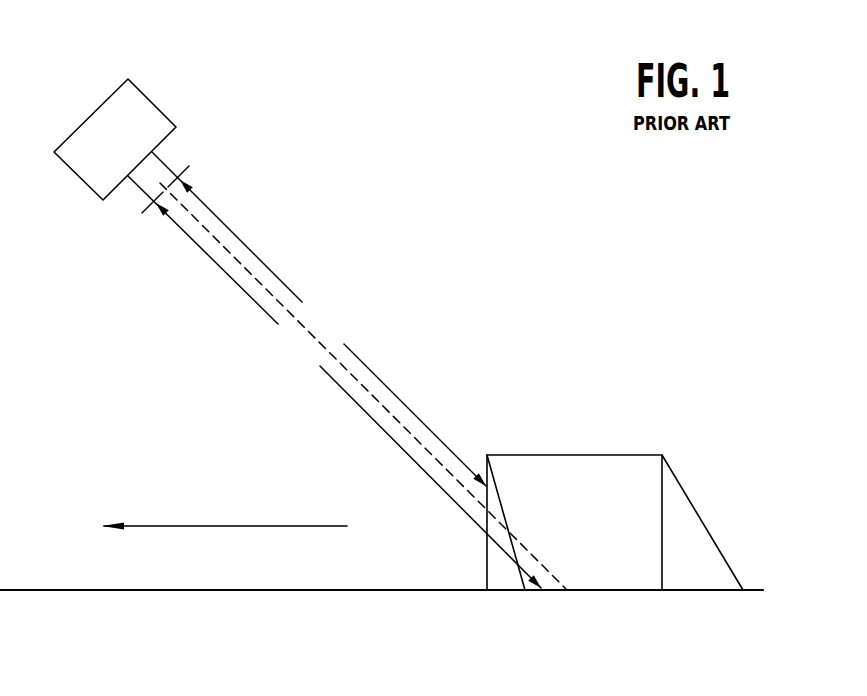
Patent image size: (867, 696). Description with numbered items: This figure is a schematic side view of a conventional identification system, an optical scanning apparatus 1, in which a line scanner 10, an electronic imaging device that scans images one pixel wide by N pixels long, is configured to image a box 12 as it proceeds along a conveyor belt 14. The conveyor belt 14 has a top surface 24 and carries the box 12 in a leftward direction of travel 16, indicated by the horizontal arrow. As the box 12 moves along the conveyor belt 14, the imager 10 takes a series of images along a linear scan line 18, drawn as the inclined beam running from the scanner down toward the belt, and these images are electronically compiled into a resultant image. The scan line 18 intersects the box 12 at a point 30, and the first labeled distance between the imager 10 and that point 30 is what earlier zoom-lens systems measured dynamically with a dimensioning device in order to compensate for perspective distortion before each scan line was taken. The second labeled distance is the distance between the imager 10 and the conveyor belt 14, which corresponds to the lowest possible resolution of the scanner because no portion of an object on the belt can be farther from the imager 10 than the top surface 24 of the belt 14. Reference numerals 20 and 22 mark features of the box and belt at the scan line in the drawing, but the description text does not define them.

The optical scanning apparatus 1 is at (594, 260).
The line scanner 10 is at (133, 120).
The box 12 is at (655, 498).
The conveyor belt 14 is at (752, 590).
The direction of travel 16 is at (211, 525).
The linear scan line 18 is at (386, 402).
The front edge of object 20 is at (481, 590).
The inclined front face of object 22 is at (488, 458).
The top surface 24 is at (543, 590).
The point on the box 30 is at (486, 486).